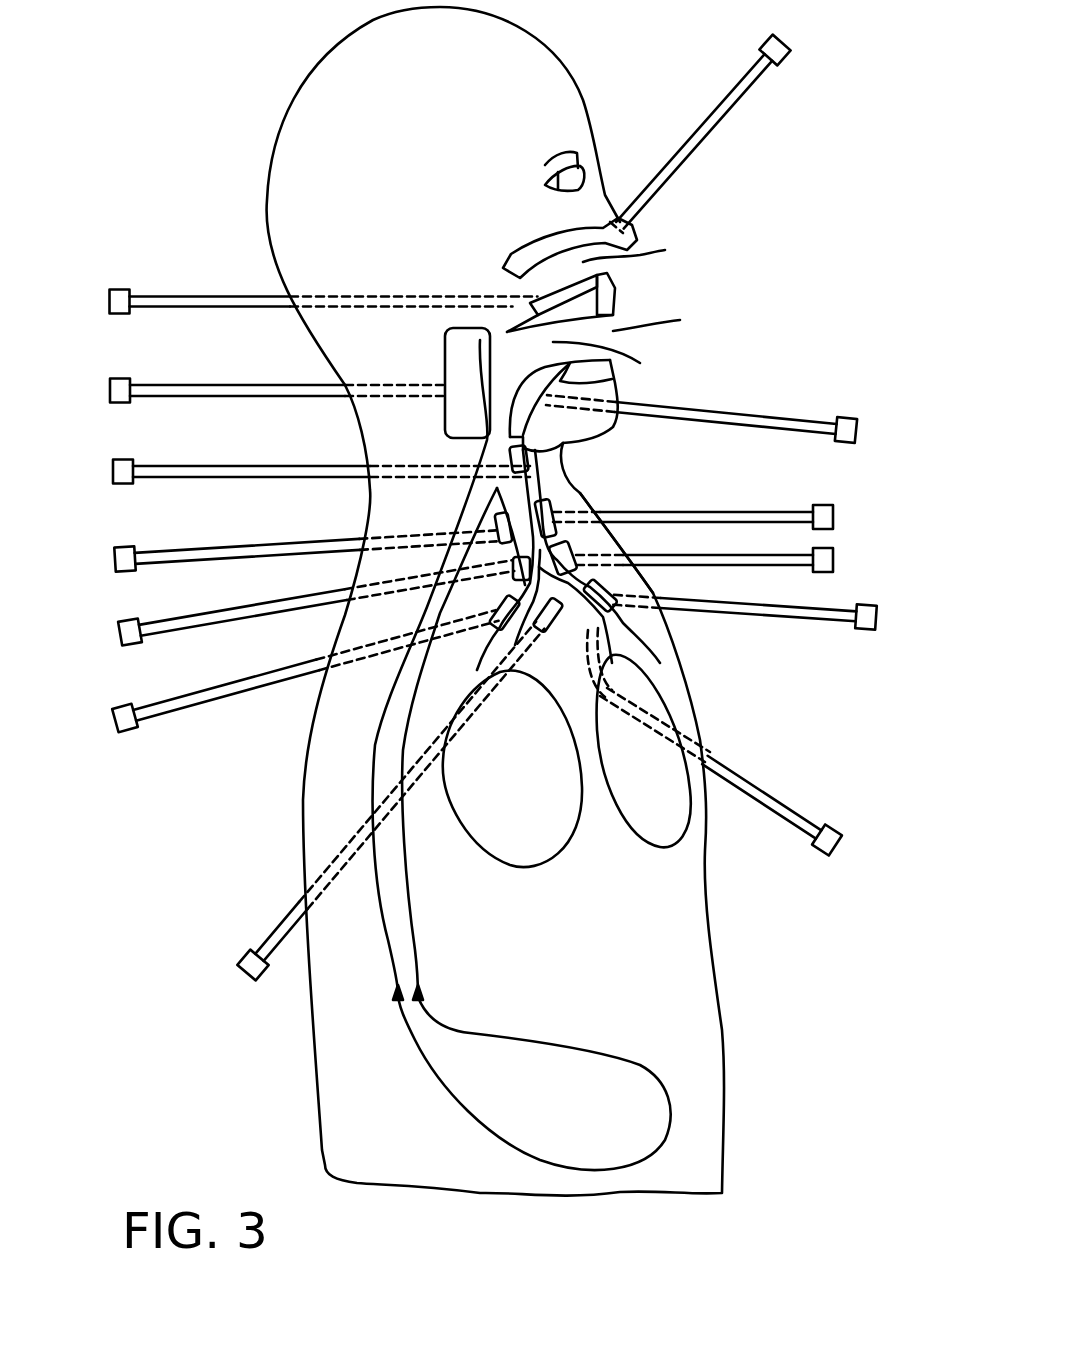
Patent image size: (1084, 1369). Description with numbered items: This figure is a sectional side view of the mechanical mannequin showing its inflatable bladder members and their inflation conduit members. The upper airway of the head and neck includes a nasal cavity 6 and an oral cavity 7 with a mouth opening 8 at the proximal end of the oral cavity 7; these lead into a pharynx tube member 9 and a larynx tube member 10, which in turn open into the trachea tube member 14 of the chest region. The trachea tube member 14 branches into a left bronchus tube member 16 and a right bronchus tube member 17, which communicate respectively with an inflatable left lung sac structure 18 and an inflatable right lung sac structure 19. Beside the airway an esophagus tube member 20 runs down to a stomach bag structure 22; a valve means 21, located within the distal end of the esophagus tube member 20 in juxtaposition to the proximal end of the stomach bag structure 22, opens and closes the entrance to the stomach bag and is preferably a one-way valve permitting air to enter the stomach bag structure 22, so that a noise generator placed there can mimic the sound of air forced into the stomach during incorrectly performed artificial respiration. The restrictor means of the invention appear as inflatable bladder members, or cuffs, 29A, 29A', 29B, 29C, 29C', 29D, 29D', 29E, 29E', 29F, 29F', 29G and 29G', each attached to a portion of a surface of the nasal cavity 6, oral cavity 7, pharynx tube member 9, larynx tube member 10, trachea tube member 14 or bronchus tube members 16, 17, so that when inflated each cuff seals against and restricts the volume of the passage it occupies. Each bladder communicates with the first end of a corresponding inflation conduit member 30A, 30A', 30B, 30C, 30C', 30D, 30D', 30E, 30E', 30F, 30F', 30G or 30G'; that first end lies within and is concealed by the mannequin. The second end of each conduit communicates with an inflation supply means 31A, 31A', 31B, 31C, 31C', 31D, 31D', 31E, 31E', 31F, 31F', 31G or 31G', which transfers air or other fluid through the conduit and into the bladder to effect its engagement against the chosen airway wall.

The nasal cavity 6 is at (665, 250).
The oral cavity 7 is at (640, 363).
The mouth opening 8 is at (668, 323).
The pharynx tube member 9 is at (490, 407).
The larynx tube member 10 is at (573, 488).
The trachea tube member 14 is at (603, 520).
The left bronchus tube member 16 is at (660, 632).
The right bronchus tube member 17 is at (480, 662).
The inflatable left lung sac structure 18 is at (683, 802).
The inflatable right lung sac structure 19 is at (540, 845).
The esophagus tube member 20 is at (380, 782).
The valve means 21 is at (420, 993).
The stomach bag structure 22 is at (647, 1110).
The inflatable bladder member 29A is at (612, 302).
The inflatable bladder member 29A' is at (521, 240).
The inflatable bladder member 29B is at (614, 382).
The inflatable bladder member 29C is at (415, 379).
The inflatable bladder member 29C' is at (613, 446).
The inflatable bladder member 29D is at (608, 499).
The inflatable bladder member 29D' is at (407, 513).
The inflatable bladder member 29E is at (633, 549).
The inflatable bladder member 29E' is at (402, 572).
The inflatable bladder member 29F is at (652, 588).
The inflatable bladder member 29F' is at (684, 695).
The inflatable bladder member 29G is at (438, 668).
The inflatable bladder member 29G' is at (385, 621).
The inflation conduit member 30A is at (334, 278).
The inflation conduit member 30A' is at (710, 141).
The inflation conduit member 30B is at (770, 415).
The inflation conduit member 30C is at (286, 367).
The inflation conduit member 30C' is at (331, 449).
The inflation conduit member 30D is at (681, 486).
The inflation conduit member 30D' is at (316, 533).
The inflation conduit member 30E is at (697, 581).
The inflation conduit member 30E' is at (326, 618).
The inflation conduit member 30F is at (755, 635).
The inflation conduit member 30F' is at (778, 796).
The inflation conduit member 30G is at (364, 791).
The inflation conduit member 30G' is at (315, 678).
The inflation supply means 31A is at (152, 266).
The inflation supply means 31A' is at (720, 36).
The inflation supply means 31B is at (858, 418).
The inflation supply means 31C is at (149, 360).
The inflation supply means 31C' is at (154, 446).
The inflation supply means 31D is at (859, 497).
The inflation supply means 31D' is at (161, 532).
The inflation supply means 31E is at (863, 541).
The inflation supply means 31E' is at (172, 607).
The inflation supply means 31F is at (893, 596).
The inflation supply means 31F' is at (870, 822).
The inflation supply means 31G is at (211, 941).
The inflation supply means 31G' is at (168, 739).